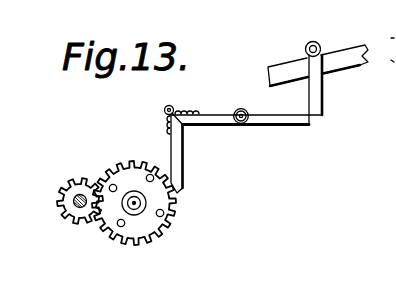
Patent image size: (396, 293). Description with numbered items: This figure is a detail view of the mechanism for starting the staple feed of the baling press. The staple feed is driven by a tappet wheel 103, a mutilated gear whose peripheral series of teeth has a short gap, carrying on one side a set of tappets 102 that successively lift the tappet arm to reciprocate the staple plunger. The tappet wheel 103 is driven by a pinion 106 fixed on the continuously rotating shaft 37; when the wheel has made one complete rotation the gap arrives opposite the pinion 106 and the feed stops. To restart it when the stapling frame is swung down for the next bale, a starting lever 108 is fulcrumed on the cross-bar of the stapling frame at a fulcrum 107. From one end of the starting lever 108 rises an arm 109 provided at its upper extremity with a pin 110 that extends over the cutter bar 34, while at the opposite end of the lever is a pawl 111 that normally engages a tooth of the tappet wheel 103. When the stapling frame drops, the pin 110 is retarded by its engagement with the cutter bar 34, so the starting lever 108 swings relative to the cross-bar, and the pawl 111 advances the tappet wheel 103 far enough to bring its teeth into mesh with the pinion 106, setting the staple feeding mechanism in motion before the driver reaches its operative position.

The cutter bar 34 is at (347, 65).
The shaft 37 is at (77, 208).
The tappets 102 is at (112, 184).
The tappet wheel 103 is at (144, 228).
The pinion 106 is at (63, 200).
The fulcrum 107 is at (241, 121).
The starting lever 108 is at (258, 118).
The arm 109 is at (324, 100).
The pin 110 is at (319, 45).
The pawl 111 is at (177, 170).